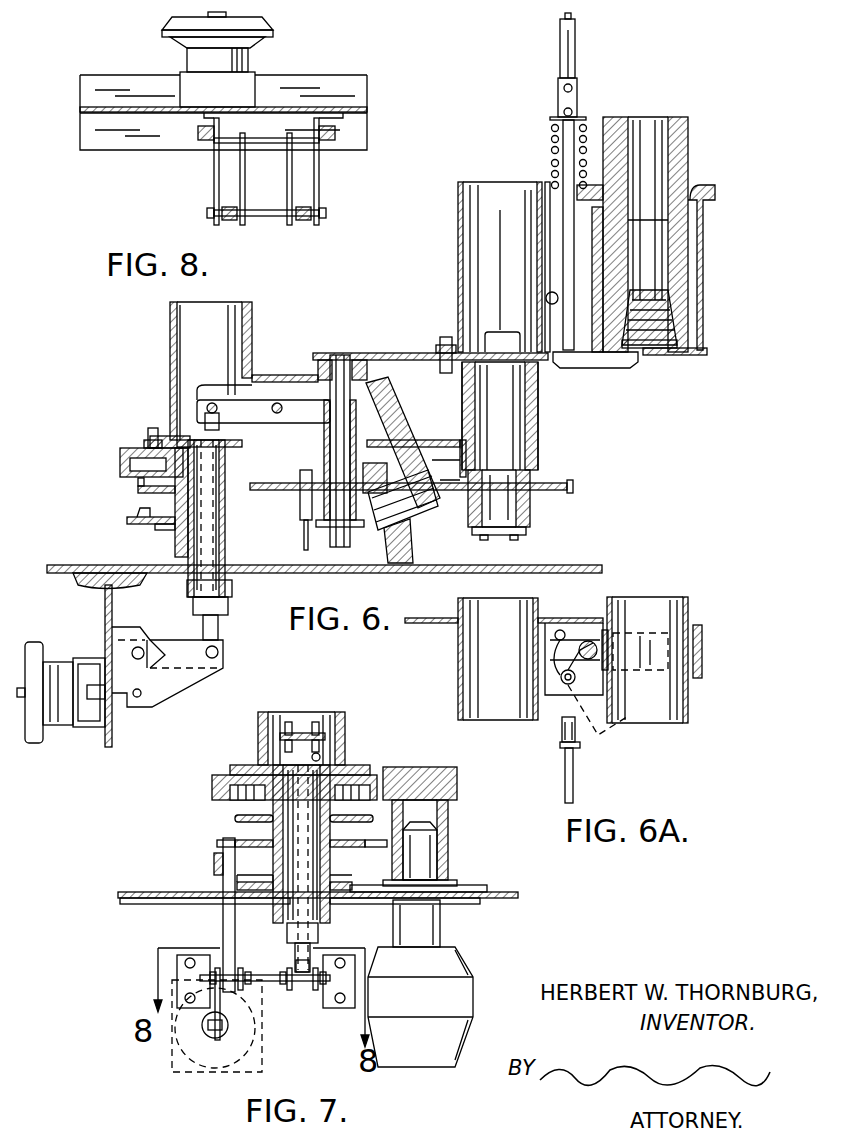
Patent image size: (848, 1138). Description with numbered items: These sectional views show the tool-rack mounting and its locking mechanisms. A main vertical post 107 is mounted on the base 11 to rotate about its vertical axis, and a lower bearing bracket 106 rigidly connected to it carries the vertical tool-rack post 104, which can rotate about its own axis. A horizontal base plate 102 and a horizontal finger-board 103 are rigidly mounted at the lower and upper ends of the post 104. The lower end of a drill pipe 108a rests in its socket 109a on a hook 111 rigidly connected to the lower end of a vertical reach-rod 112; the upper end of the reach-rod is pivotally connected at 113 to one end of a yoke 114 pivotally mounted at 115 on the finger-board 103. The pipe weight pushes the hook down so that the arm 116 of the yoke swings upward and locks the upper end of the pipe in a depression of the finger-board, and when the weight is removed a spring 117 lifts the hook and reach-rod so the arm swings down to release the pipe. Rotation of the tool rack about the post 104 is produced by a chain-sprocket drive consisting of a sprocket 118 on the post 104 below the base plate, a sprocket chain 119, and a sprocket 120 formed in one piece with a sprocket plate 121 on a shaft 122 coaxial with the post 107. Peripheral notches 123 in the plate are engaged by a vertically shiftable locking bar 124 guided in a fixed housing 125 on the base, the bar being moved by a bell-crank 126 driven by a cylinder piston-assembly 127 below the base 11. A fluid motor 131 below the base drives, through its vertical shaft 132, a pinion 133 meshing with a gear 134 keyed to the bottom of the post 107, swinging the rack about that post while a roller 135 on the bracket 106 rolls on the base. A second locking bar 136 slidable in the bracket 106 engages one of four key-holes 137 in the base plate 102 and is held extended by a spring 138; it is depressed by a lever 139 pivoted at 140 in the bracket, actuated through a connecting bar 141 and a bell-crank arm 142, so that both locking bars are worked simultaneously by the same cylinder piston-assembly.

In FIG. 6, the base 11 is at (583, 563).
In FIG. 7, the base 11 is at (118, 892).
In FIG. 6, the base plate 102 is at (400, 350).
In FIG. 6A, the finger-board 103 is at (557, 633).
In FIG. 6, the tool-rack post 104 is at (457, 278).
In FIG. 6A, the tool-rack post 104 is at (458, 670).
In FIG. 6, the lower bearing bracket 106 is at (305, 375).
In FIG. 6, the main vertical post 107 is at (170, 378).
In FIG. 7, the main vertical post 107 is at (258, 740).
In FIG. 6, the drill pipe 108a is at (689, 147).
In FIG. 6A, the drill pipe 108a is at (689, 702).
In FIG. 6, the socket 109a is at (704, 258).
In FIG. 6, the hook 111 is at (590, 360).
In FIG. 6, the reach-rod 112 is at (576, 62).
In FIG. 6A, the reach-rod 112 is at (574, 777).
In FIG. 6A, the pivotal connection 113 is at (568, 686).
In FIG. 6A, the yoke 114 is at (577, 688).
In FIG. 6A, the yoke pivot 115 is at (588, 641).
In FIG. 6A, the arm 116 is at (652, 630).
In FIG. 6, the spring 117 is at (551, 143).
In FIG. 6, the sprocket 118 is at (573, 490).
In FIG. 6, the sprocket chain 119 is at (307, 497).
In FIG. 6, the sprocket 120 is at (163, 490).
In FIG. 7, the sprocket 120 is at (235, 818).
In FIG. 6, the sprocket plate 121 is at (150, 518).
In FIG. 7, the sprocket plate 121 is at (253, 840).
In FIG. 6, the shaft 122 is at (207, 537).
In FIG. 7, the shaft 122 is at (300, 805).
In FIG. 6, the peripheral notches 123 is at (150, 514).
In FIG. 7, the peripheral notches 123 is at (217, 843).
In FIG. 8, the locking bar 124 is at (233, 225).
In FIG. 7, the locking bar 124 is at (232, 883).
In FIG. 7, the fixed housing 125 is at (214, 860).
In FIG. 8, the bell-crank 126 is at (212, 182).
In FIG. 6, the bell-crank 126 is at (180, 680).
In FIG. 7, the bell-crank 126 is at (235, 1000).
In FIG. 8, the cylinder piston-assembly 127 is at (250, 60).
In FIG. 6, the cylinder piston-assembly 127 is at (65, 728).
In FIG. 7, the cylinder piston-assembly 127 is at (200, 1047).
In FIG. 7, the fluid motor 131 is at (435, 1025).
In FIG. 7, the vertical shaft 132 is at (437, 832).
In FIG. 7, the pinion 133 is at (458, 783).
In FIG. 6, the gear 134 is at (122, 460).
In FIG. 7, the gear 134 is at (212, 780).
In FIG. 6, the roller 135 is at (410, 550).
In FIG. 6, the locking bar 136 is at (342, 350).
In FIG. 6, the key-holes 137 is at (354, 360).
In FIG. 6, the spring 138 is at (358, 432).
In FIG. 6, the lever 139 is at (265, 397).
In FIG. 7, the lever 139 is at (290, 725).
In FIG. 6, the pivot 140 is at (278, 403).
In FIG. 8, the connecting bar 141 is at (306, 225).
In FIG. 6, the connecting bar 141 is at (196, 425).
In FIG. 7, the connecting bar 141 is at (320, 757).
In FIG. 8, the bell-crank arm 142 is at (319, 178).
In FIG. 7, the bell-crank arm 142 is at (290, 993).